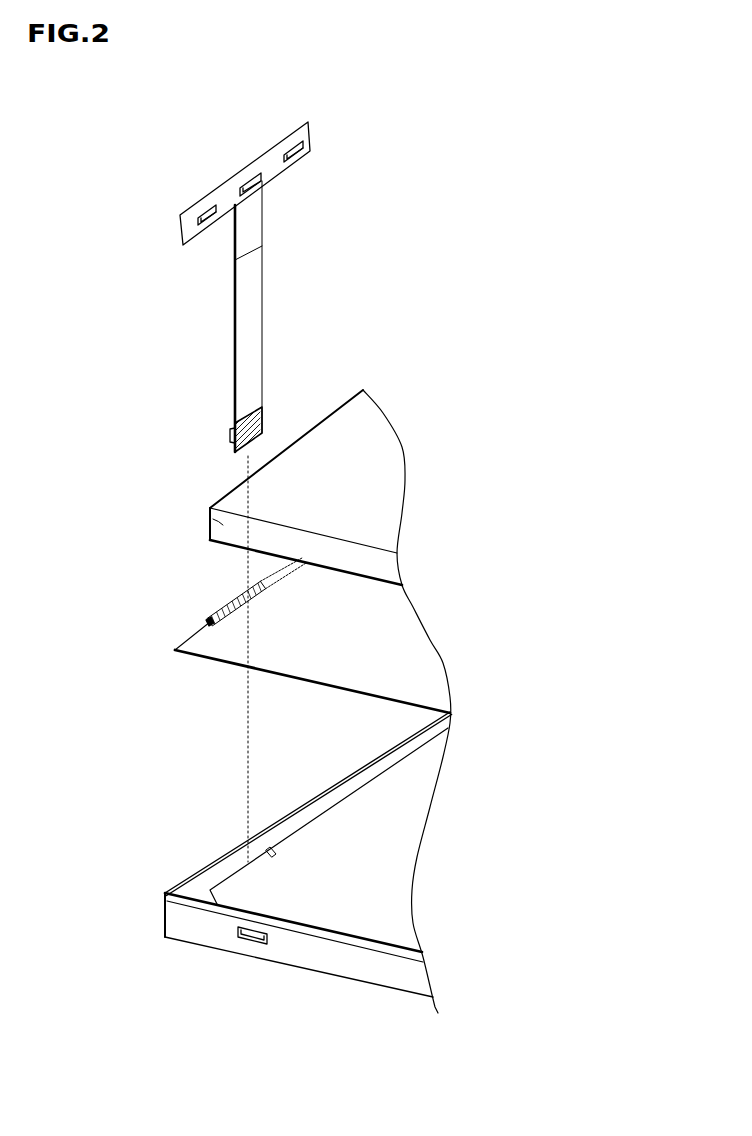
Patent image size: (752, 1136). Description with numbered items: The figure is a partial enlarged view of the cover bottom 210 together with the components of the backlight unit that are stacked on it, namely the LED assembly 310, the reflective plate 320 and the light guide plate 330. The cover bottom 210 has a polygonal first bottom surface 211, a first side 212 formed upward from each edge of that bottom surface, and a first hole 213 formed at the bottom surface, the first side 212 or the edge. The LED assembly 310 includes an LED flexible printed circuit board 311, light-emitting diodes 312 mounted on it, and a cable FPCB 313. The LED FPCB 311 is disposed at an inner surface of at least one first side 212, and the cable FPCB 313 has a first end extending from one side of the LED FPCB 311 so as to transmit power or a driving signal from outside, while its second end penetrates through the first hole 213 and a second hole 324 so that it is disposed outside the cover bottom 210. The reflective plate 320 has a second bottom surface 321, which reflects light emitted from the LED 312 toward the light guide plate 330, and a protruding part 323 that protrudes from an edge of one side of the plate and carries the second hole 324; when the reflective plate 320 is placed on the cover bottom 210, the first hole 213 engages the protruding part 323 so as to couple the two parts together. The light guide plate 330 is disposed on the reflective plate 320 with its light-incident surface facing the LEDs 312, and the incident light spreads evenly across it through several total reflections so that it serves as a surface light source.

The cover bottom 210 is at (228, 822).
The first bottom surface 211 is at (313, 907).
The first side 212 is at (187, 922).
The first hole 213 is at (235, 872).
The LED assembly 310 is at (322, 243).
The LED flexible printed circuit board 311 is at (225, 192).
The light-emitting diode 312 is at (264, 183).
The cable FPCB 313 is at (250, 315).
The reflective plate 320 is at (207, 678).
The second bottom surface 321 is at (212, 627).
The protruding part 323 is at (211, 621).
The second hole 324 is at (240, 600).
The light guide plate 330 is at (220, 524).